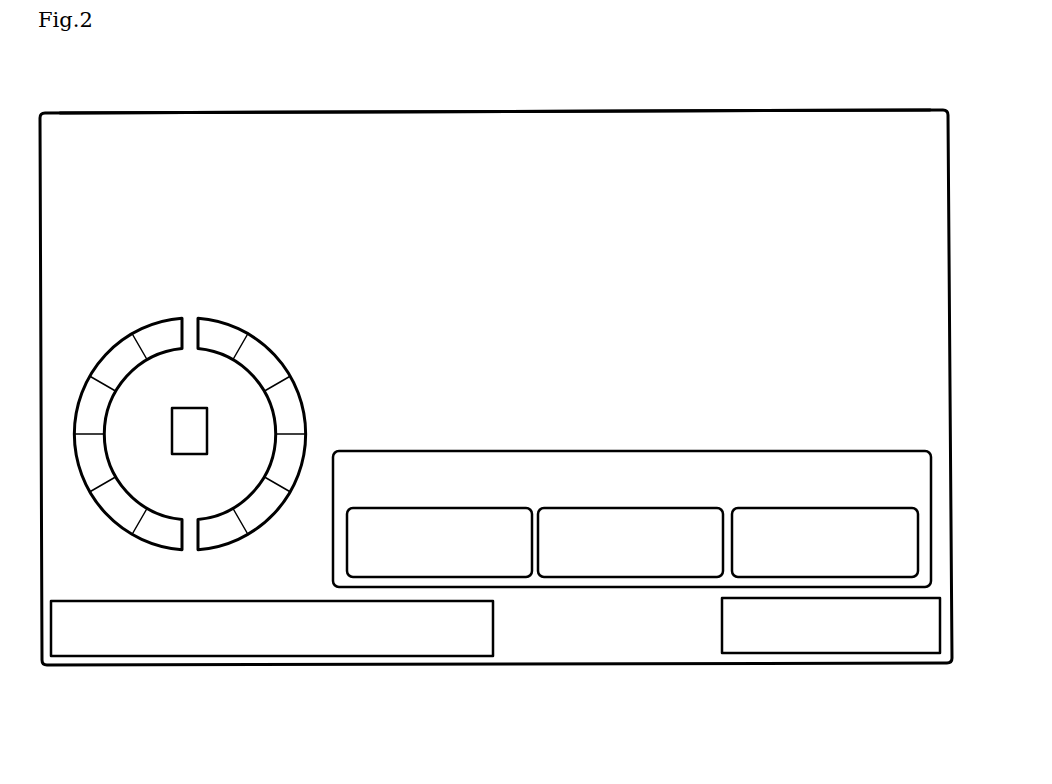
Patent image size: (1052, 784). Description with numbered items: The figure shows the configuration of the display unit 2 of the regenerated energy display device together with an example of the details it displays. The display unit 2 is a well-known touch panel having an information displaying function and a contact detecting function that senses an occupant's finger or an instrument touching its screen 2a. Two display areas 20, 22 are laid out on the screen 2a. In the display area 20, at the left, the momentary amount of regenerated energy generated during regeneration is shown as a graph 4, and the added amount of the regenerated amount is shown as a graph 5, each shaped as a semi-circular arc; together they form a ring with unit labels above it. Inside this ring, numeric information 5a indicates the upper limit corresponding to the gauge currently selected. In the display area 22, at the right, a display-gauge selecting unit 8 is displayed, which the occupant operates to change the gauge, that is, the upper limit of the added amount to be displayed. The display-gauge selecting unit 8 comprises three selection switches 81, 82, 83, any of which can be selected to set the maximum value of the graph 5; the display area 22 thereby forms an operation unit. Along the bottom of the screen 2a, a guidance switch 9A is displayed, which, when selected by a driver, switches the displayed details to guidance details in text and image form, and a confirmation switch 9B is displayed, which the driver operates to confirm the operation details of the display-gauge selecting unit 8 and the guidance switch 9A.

The display unit 2 is at (888, 110).
The screen 2a is at (537, 137).
The graph 4 is at (125, 510).
The graph 5 is at (268, 498).
The numeric information 5a is at (170, 427).
The display-gauge selecting unit 8 is at (632, 516).
The selection switch 81 is at (457, 558).
The selection switch 82 is at (646, 558).
The selection switch 83 is at (825, 542).
The guidance switch 9A is at (267, 645).
The confirmation switch 9B is at (822, 643).
The display area 20 is at (200, 290).
The display area 22 is at (592, 590).